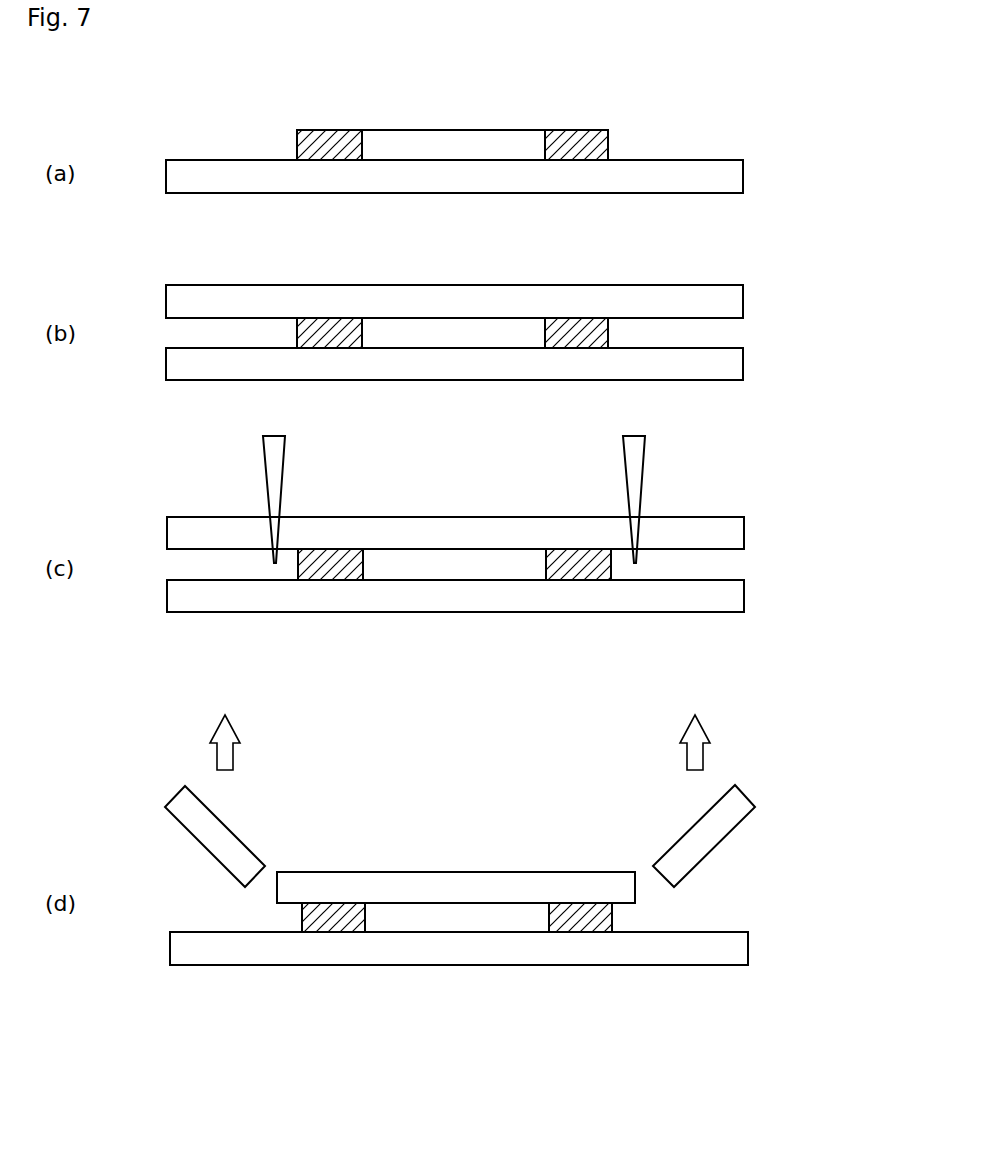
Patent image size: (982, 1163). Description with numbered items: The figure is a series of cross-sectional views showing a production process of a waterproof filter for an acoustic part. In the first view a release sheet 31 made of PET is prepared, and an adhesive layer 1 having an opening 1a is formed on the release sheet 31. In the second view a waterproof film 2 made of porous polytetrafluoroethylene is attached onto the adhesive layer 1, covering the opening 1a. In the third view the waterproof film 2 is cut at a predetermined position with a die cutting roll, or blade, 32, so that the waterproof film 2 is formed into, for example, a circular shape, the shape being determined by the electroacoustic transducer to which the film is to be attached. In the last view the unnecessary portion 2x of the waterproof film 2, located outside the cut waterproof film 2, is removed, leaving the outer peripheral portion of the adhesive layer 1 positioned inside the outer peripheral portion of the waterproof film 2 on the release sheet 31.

The adhesive layer 1 is at (583, 130).
The opening 1a is at (420, 140).
The waterproof film 2 is at (730, 305).
The unnecessary portion 2x is at (185, 800).
The release sheet 31 is at (730, 179).
The die cutting roll (blade) 32 is at (636, 458).